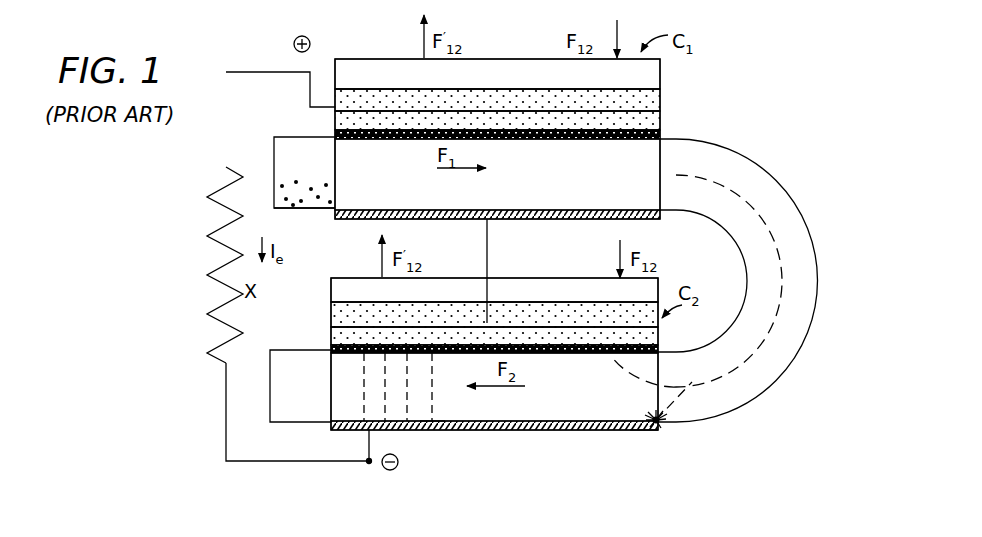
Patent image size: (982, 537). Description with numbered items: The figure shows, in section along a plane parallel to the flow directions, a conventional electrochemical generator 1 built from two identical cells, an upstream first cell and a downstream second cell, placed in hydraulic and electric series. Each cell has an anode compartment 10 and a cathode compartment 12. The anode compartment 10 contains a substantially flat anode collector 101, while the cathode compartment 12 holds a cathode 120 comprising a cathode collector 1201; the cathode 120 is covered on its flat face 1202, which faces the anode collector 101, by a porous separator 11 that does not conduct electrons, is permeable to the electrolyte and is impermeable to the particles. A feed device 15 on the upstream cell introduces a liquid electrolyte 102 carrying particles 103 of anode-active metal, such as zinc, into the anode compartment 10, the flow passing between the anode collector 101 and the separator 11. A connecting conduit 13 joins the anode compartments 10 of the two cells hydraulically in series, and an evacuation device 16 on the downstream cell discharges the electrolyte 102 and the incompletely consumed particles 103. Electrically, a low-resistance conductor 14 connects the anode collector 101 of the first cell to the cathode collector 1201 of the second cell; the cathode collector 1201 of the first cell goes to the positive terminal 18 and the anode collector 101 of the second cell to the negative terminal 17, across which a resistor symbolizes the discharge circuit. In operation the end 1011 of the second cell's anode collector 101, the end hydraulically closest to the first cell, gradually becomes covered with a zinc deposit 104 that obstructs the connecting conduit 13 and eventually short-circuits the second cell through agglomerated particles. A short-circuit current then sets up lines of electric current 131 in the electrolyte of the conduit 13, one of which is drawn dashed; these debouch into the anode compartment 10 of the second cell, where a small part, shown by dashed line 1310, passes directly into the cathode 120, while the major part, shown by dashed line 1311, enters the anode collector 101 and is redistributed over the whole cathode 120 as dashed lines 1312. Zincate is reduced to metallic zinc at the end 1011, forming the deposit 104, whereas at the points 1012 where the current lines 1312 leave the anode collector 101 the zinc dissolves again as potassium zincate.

The electrochemical generator 1 is at (694, 122).
The anode compartment 10 is at (541, 184).
The porous separator 11 is at (587, 139).
The cathode compartment 12 is at (663, 80).
The connecting conduit 13 is at (803, 218).
The electric conductor 14 is at (487, 253).
The feed device 15 is at (300, 137).
The evacuation device 16 is at (315, 350).
The negative terminal 17 is at (369, 461).
The positive terminal 18 is at (310, 72).
The anode collector 101 is at (340, 205).
The liquid electrolyte 102 is at (309, 200).
The particles 103 is at (290, 185).
The deposit 104 is at (651, 418).
The cathode 120 is at (358, 90).
The lines of electric current 131 is at (803, 252).
The end of the collector 1011 is at (660, 431).
The points 1012 is at (433, 421).
The cathode collector 1201 is at (422, 112).
The flat face 1202 is at (508, 130).
The dashed line 1310 is at (622, 372).
The dashed line 1311 is at (688, 394).
The dashed lines 1312 is at (364, 400).